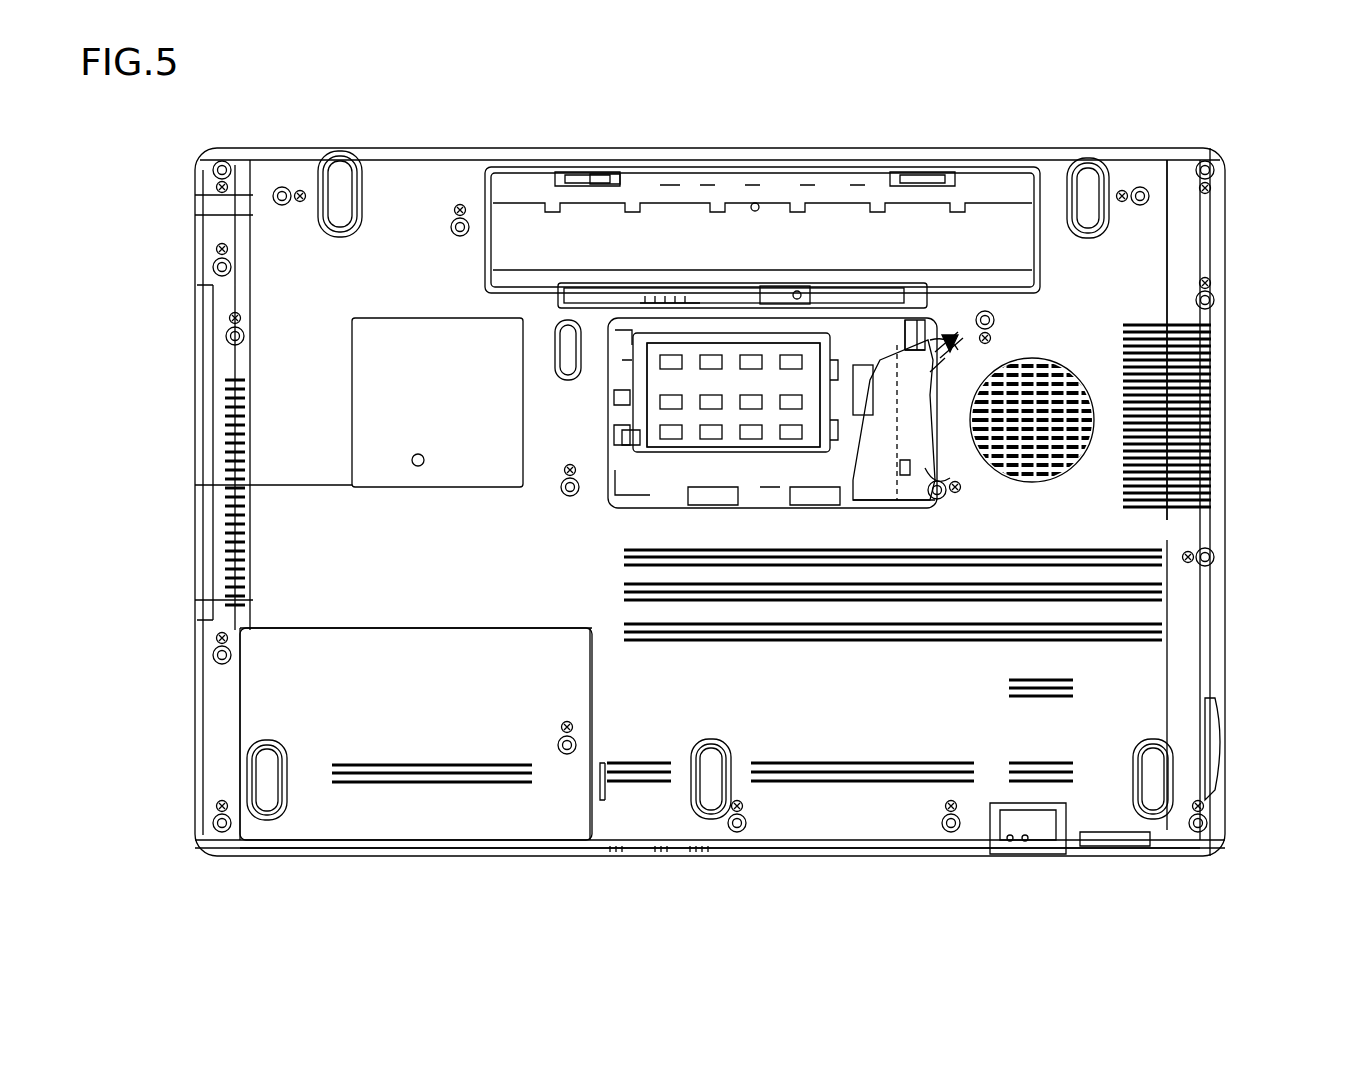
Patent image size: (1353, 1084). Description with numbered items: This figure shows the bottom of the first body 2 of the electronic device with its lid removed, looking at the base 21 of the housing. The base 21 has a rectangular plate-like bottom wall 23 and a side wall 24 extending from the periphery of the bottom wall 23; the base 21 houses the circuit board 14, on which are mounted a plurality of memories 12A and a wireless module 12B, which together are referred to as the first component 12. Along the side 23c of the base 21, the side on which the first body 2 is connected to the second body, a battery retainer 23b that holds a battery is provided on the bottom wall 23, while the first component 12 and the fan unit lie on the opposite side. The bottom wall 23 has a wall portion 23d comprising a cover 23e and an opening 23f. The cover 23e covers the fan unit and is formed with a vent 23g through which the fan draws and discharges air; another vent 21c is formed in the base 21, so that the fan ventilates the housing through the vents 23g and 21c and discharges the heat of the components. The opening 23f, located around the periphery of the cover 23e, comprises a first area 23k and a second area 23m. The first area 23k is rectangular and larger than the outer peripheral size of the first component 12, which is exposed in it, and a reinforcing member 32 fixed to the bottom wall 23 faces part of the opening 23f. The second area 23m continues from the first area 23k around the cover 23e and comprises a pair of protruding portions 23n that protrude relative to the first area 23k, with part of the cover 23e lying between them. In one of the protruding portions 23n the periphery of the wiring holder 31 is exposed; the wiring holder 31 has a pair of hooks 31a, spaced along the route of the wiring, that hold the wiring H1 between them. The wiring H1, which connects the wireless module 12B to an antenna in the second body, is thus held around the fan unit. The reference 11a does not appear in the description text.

The first body 2 is at (1175, 122).
The bottom wall of housing 11a is at (842, 838).
The first component 12 is at (767, 499).
The memories 12A is at (712, 403).
The wireless module 12B is at (880, 320).
The circuit board 14 is at (928, 340).
The base 21 is at (1225, 533).
The vent 21c is at (1213, 494).
The bottom wall 23 is at (1153, 240).
The battery retainer 23b is at (616, 180).
The side 23c is at (553, 160).
The wall portion 23d is at (1082, 300).
The cover 23e is at (1085, 350).
The opening 23f is at (614, 397).
The vent 23g is at (1050, 386).
The first area 23k is at (614, 430).
The second area 23m is at (906, 320).
The protruding portions 23n is at (960, 352).
The side wall 24 is at (1226, 343).
The wiring holder 31 is at (1080, 284).
The hooks 31a is at (938, 360).
The reinforcing member 32 is at (820, 340).
The wiring H1 is at (950, 335).